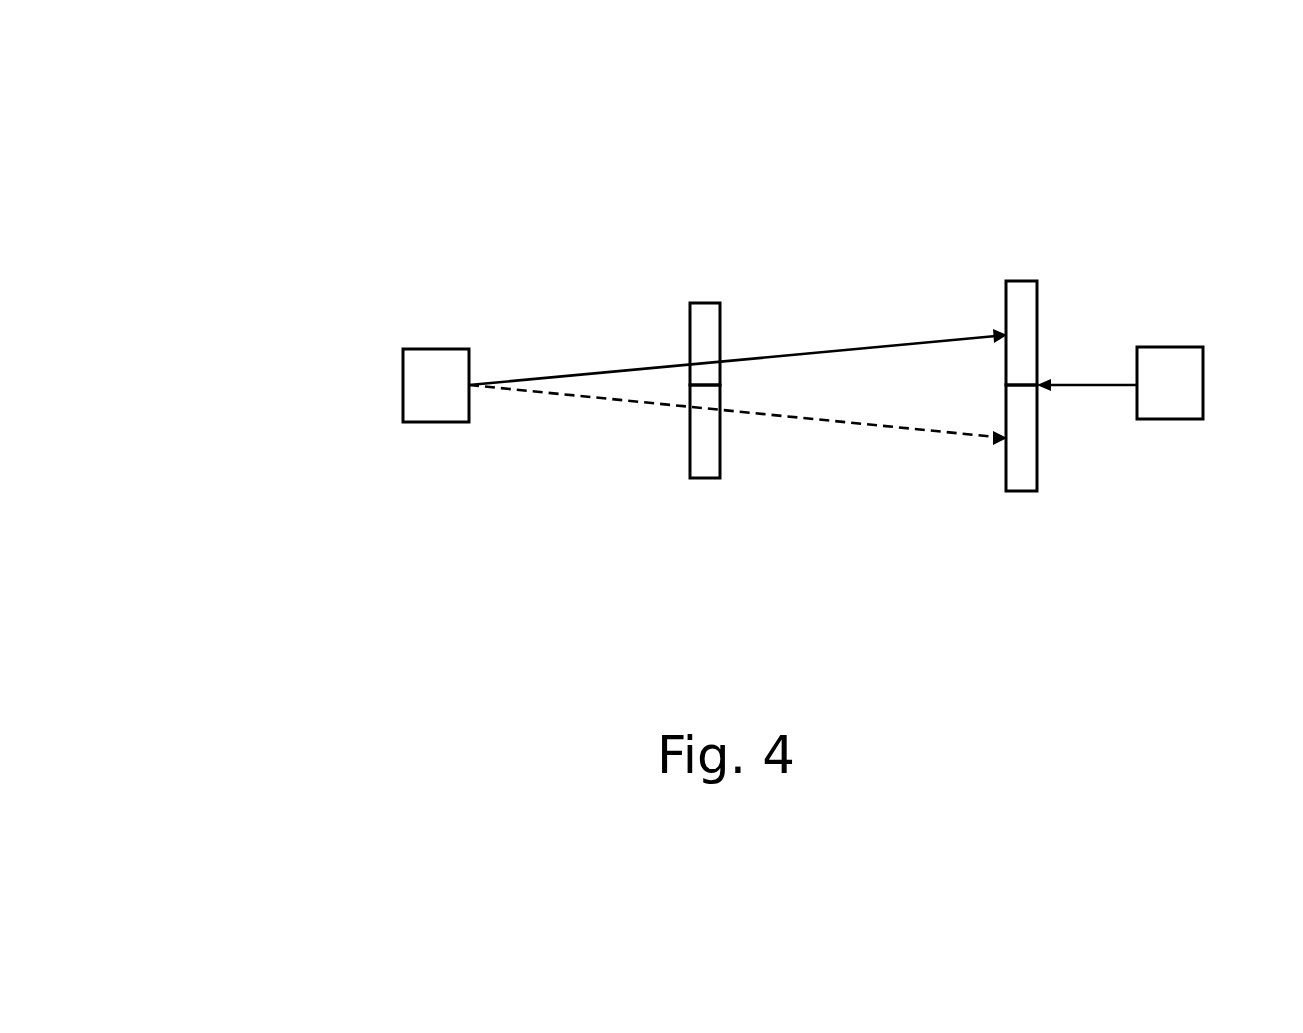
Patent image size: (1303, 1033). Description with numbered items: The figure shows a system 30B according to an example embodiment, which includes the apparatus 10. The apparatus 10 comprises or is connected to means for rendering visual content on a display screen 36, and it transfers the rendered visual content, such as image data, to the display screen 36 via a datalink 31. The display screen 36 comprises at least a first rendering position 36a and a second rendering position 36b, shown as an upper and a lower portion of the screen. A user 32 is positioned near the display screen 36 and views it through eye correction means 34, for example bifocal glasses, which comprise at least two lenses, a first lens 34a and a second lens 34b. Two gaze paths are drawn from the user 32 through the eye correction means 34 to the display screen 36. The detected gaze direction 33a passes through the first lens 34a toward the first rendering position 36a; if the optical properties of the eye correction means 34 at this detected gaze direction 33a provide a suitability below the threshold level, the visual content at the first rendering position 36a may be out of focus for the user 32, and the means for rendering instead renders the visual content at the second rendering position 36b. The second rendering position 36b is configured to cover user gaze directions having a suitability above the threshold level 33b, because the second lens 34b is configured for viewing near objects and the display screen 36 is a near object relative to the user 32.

The system 30B is at (298, 178).
The user 32 is at (423, 395).
The detected gaze direction 33a is at (567, 372).
The user gaze direction having suitability above threshold level 33b is at (573, 398).
The eye correction means 34 is at (645, 338).
The first lens 34a is at (688, 310).
The second lens 34b is at (705, 478).
The display screen 36 is at (966, 346).
The first rendering position 36a is at (1015, 285).
The second rendering position 36b is at (1017, 492).
The datalink 31 is at (1107, 388).
The apparatus 10 is at (1175, 358).